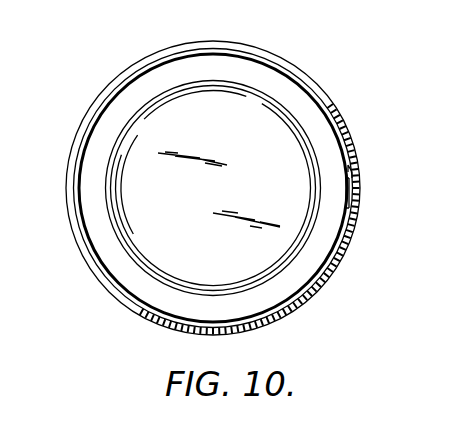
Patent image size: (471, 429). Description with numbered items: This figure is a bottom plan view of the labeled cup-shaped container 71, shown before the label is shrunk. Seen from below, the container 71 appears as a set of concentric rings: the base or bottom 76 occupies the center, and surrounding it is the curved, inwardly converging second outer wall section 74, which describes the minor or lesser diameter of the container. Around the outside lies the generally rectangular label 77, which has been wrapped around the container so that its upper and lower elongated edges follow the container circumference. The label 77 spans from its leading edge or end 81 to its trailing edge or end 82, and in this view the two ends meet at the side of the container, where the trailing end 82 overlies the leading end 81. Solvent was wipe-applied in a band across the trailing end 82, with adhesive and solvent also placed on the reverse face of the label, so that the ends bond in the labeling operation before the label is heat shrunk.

The cup-shaped container 71 is at (143, 45).
The label 77 is at (302, 80).
The second outer wall section 74 is at (102, 228).
The base or bottom 76 is at (227, 198).
The leading edge or end 81 is at (346, 188).
The trailing edge or end 82 is at (359, 189).